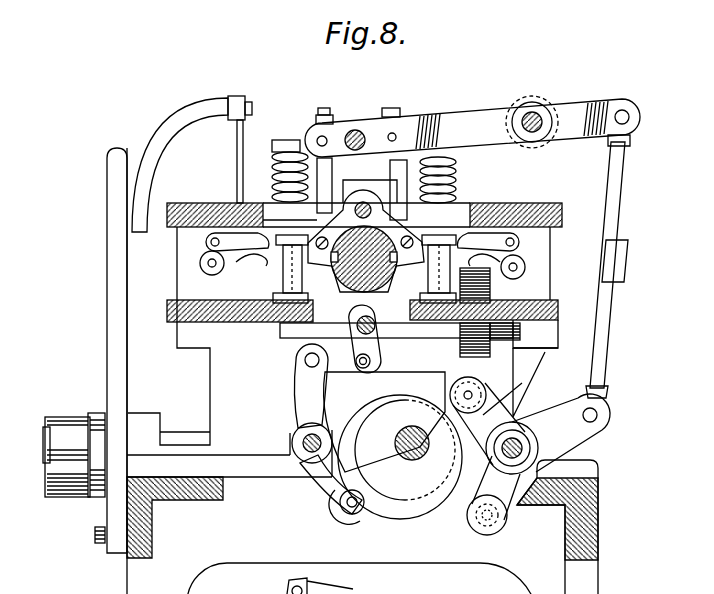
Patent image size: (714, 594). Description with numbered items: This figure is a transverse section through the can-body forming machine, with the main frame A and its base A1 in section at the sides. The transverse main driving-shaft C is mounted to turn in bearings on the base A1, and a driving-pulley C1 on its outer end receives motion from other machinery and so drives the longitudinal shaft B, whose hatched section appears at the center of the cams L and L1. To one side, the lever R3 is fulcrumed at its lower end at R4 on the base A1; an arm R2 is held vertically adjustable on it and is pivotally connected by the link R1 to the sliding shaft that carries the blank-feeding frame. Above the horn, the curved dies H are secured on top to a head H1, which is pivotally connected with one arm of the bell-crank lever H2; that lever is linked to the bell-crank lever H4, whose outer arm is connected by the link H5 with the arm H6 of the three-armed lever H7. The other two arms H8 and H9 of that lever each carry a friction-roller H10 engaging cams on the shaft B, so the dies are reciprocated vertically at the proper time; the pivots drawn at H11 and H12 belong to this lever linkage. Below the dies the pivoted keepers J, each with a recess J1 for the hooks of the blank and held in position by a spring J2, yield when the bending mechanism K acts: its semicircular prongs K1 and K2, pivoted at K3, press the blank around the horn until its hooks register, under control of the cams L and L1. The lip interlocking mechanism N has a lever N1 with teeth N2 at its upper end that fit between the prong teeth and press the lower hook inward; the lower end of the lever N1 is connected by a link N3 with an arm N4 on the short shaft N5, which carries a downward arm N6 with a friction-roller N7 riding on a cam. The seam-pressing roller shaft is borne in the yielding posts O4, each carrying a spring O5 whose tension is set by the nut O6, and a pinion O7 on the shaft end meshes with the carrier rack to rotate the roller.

The main driving-shaft C is at (185, 436).
The main frame A is at (298, 535).
The base A1 is at (596, 538).
The driving-pulley C1 is at (58, 412).
The lever R3 is at (107, 318).
The fulcrum R4 is at (95, 539).
The arm R2 is at (174, 111).
The link R1 is at (237, 158).
The head H1 is at (317, 214).
The bell-crank lever H4 is at (562, 212).
The bell-crank lever H2 is at (556, 310).
The arm H6 is at (472, 126).
The link H5 is at (334, 180).
The curved dies H is at (366, 203).
The spring O5 is at (273, 170).
The yielding posts O4 is at (283, 270).
The keepers J is at (205, 243).
The recess J1 is at (250, 254).
The spring J2 is at (226, 268).
The bending mechanism K is at (331, 271).
The semicircular prong K2 is at (364, 259).
The semicircular prong K1 is at (347, 253).
The pivot K3 is at (408, 267).
The teeth N2 is at (396, 339).
The lever N1 is at (375, 362).
The link N3 is at (296, 361).
The arm N4 is at (298, 397).
The short shaft N5 is at (303, 444).
The lip or hook interlocking mechanism N is at (384, 422).
The arm N6 is at (322, 486).
The friction-roller N7 is at (362, 516).
The cam L is at (400, 457).
The cam L1 is at (452, 510).
The longitudinal shaft B is at (415, 462).
The pivot H12 is at (478, 390).
The arm H9 is at (548, 432).
The friction-roller H10 is at (520, 382).
The arm H8 is at (560, 412).
The three-armed lever H7 is at (621, 261).
The arm H11 is at (512, 485).
The pinion O7 is at (462, 342).
The nut O6 is at (497, 285).